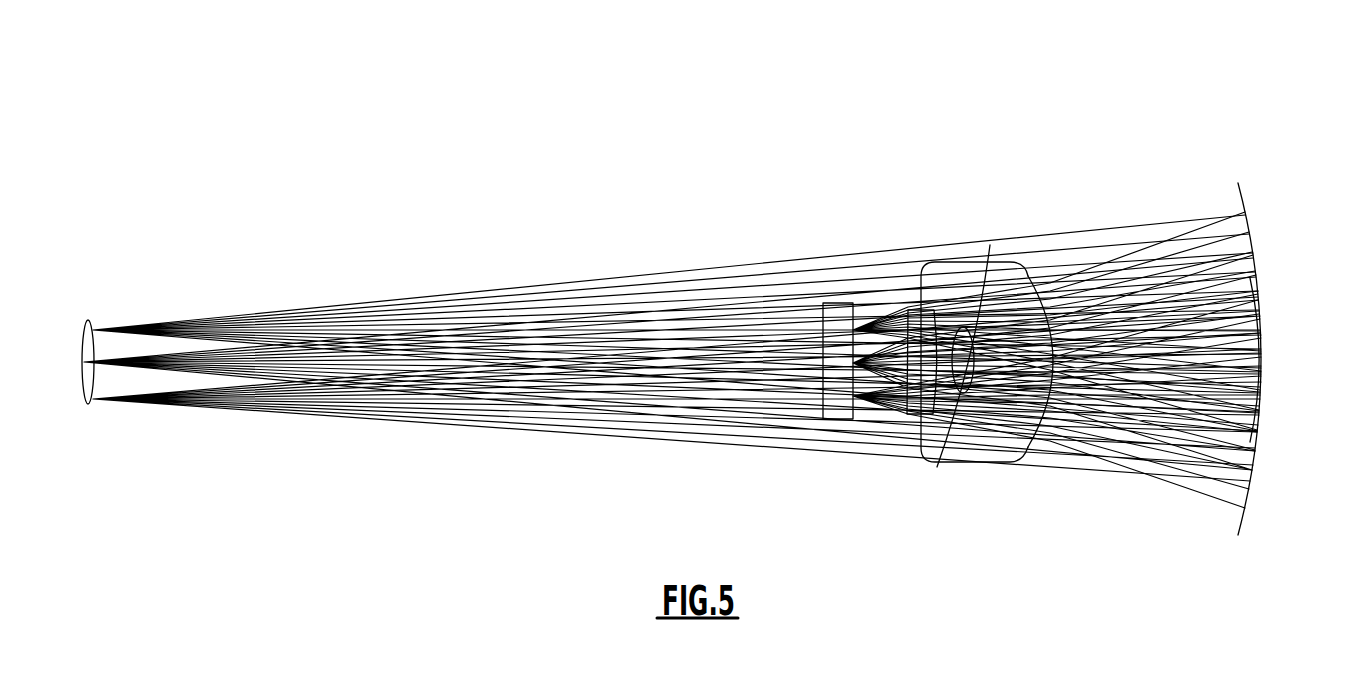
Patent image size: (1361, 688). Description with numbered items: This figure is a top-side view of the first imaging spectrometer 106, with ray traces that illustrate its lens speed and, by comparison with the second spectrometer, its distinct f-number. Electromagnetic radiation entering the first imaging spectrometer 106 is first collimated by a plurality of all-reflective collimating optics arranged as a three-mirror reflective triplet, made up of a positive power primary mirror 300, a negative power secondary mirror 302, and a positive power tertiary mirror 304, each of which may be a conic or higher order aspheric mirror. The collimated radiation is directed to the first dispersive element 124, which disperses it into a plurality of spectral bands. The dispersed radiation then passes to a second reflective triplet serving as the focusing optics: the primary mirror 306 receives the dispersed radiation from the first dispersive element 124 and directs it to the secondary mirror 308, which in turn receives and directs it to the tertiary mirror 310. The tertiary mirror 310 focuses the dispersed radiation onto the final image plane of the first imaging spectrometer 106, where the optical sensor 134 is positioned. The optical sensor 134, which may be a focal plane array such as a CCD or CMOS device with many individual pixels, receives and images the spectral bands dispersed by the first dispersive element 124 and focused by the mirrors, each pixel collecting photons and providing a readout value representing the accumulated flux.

The first imaging spectrometer 106 is at (1195, 69).
The first dispersive element 124 is at (937, 467).
The optical sensor 134 is at (838, 312).
The primary mirror 300 is at (1242, 189).
The secondary mirror 302 is at (990, 245).
The tertiary mirror 304 is at (1256, 300).
The primary mirror 306 is at (1066, 411).
The secondary mirror 308 is at (908, 308).
The tertiary mirror 310 is at (993, 450).